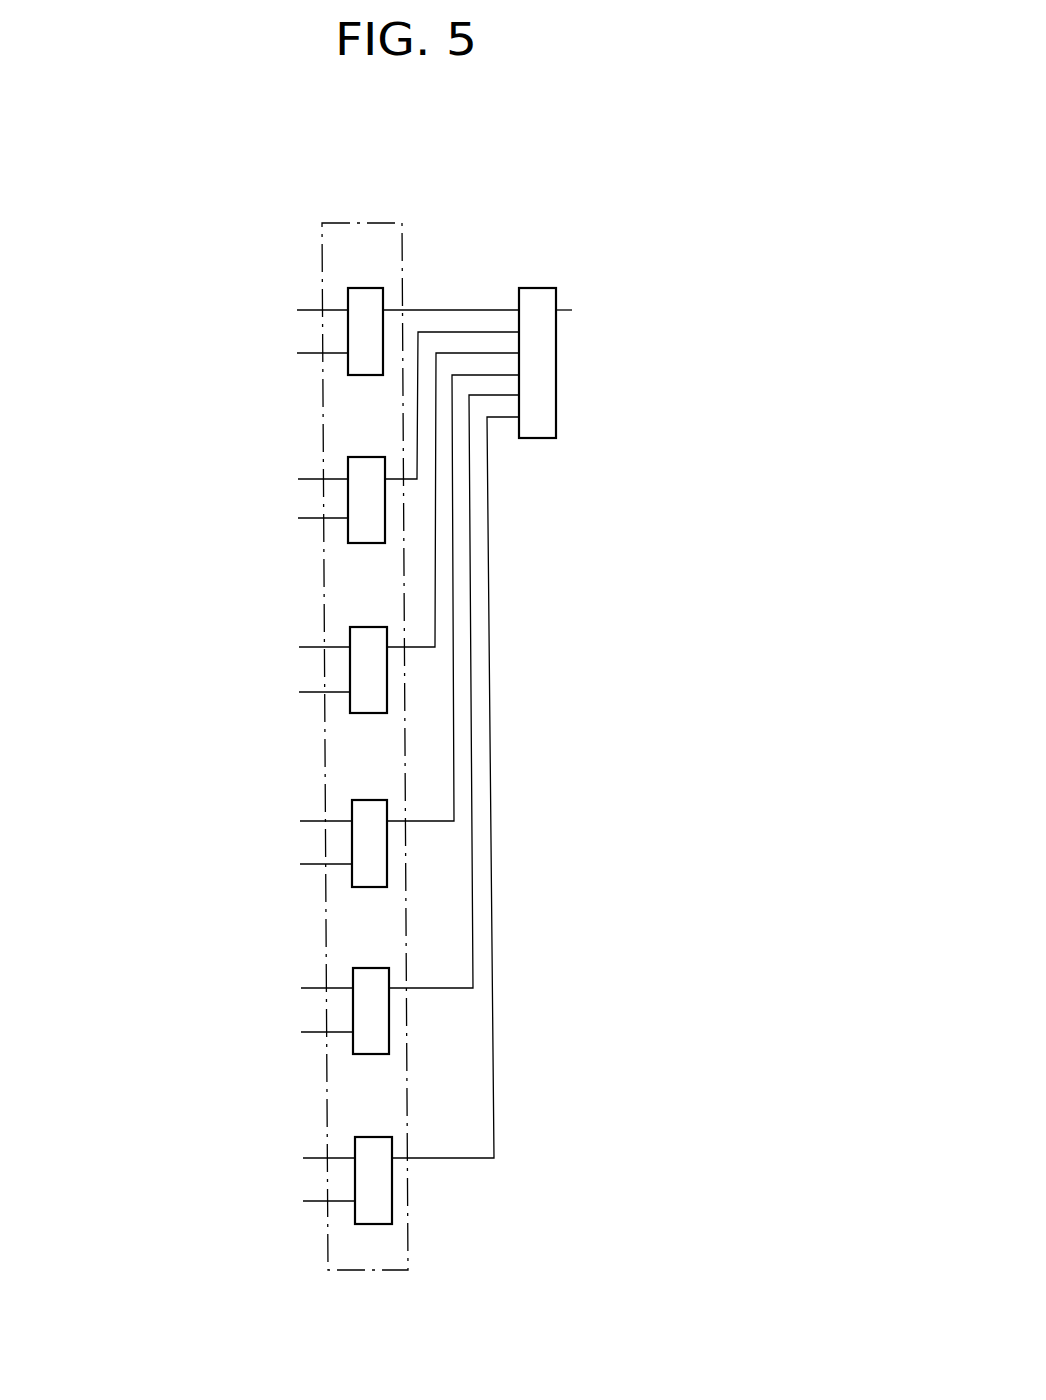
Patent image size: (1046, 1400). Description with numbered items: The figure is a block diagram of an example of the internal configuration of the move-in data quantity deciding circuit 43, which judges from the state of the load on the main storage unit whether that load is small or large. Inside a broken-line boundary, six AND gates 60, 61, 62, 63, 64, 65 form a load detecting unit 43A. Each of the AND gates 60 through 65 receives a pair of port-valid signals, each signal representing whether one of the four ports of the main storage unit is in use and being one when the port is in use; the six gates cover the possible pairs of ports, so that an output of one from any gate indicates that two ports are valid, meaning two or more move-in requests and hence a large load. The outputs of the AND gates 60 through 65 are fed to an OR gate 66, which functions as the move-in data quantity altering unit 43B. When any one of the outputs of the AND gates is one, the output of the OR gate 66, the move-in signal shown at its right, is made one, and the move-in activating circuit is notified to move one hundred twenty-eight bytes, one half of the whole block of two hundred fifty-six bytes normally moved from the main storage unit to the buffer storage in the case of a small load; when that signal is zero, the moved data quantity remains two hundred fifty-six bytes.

The move-in data quantity deciding circuit 43 is at (648, 255).
The load detecting unit 43A is at (407, 1193).
The move-in data quantity altering unit 43B is at (537, 363).
The AND gate 60 is at (359, 288).
The AND gate 61 is at (358, 457).
The AND gate 62 is at (358, 627).
The AND gate 63 is at (360, 800).
The AND gate 64 is at (361, 968).
The AND gate 65 is at (362, 1137).
The OR gate 66 is at (526, 288).